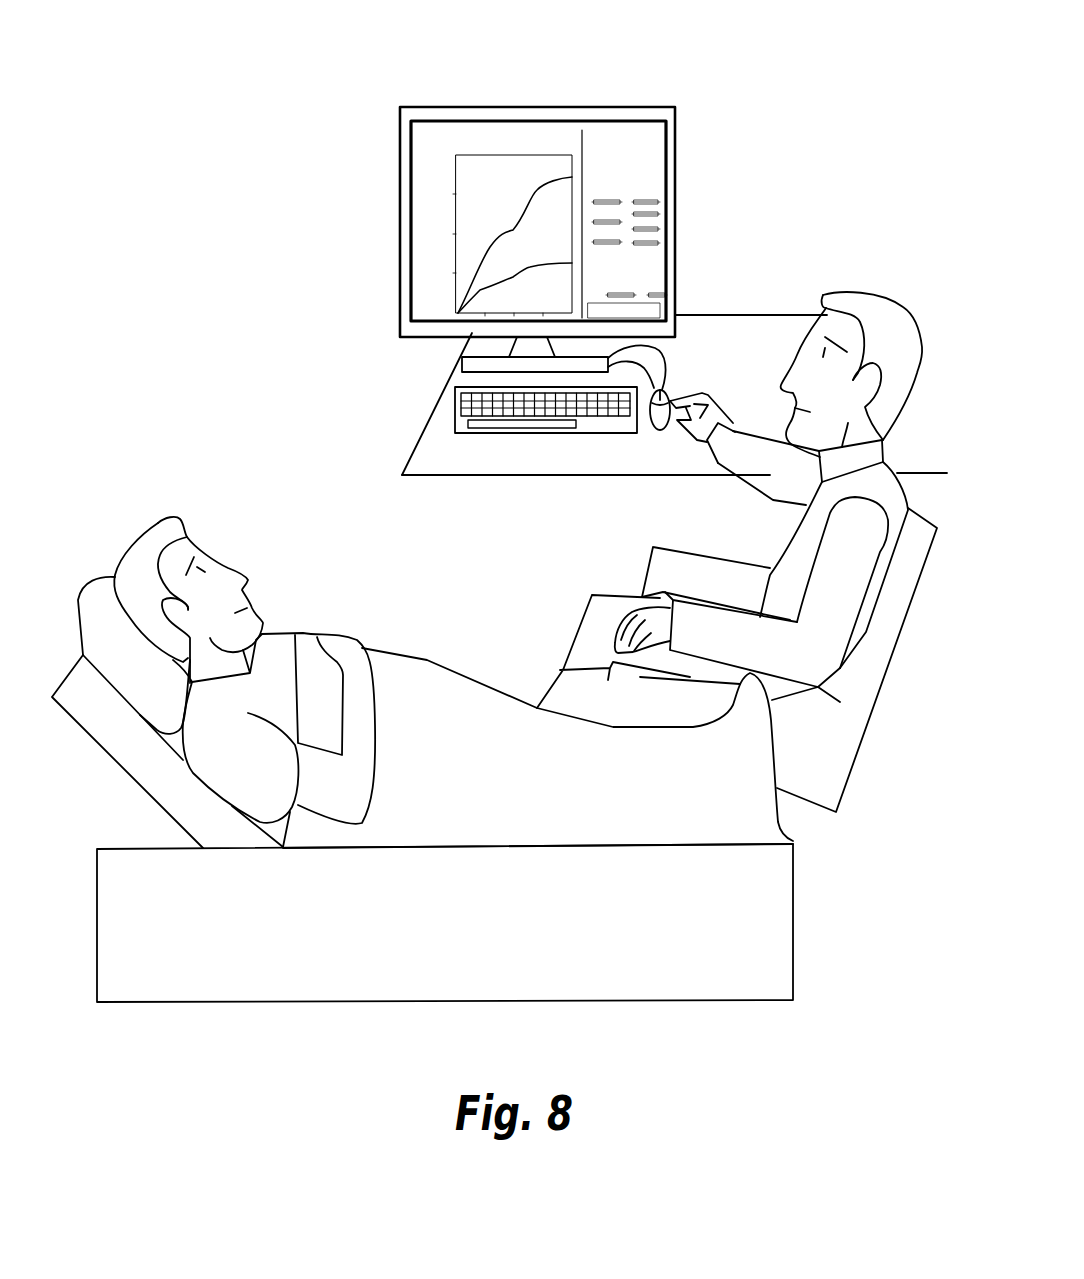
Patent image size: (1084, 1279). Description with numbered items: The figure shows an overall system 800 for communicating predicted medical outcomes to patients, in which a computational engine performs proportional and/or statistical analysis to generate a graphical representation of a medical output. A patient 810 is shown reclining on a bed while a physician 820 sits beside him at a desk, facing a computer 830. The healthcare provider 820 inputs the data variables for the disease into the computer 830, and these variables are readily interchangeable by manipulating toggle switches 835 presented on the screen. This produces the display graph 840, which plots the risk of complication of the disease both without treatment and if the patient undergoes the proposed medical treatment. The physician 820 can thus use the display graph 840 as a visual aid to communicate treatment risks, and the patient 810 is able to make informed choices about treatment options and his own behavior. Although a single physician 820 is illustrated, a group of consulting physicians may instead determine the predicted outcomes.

The overall system 800 is at (814, 137).
The patient 810 is at (160, 508).
The physician 820 is at (878, 280).
The computer 830 is at (580, 85).
The toggle switches 835 is at (687, 142).
The display graph 840 is at (422, 202).